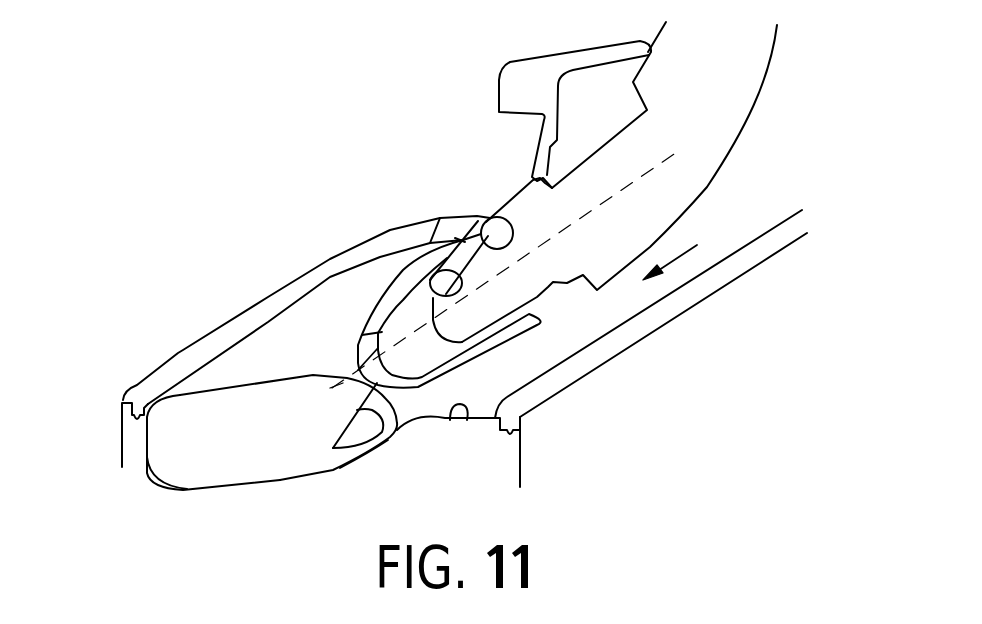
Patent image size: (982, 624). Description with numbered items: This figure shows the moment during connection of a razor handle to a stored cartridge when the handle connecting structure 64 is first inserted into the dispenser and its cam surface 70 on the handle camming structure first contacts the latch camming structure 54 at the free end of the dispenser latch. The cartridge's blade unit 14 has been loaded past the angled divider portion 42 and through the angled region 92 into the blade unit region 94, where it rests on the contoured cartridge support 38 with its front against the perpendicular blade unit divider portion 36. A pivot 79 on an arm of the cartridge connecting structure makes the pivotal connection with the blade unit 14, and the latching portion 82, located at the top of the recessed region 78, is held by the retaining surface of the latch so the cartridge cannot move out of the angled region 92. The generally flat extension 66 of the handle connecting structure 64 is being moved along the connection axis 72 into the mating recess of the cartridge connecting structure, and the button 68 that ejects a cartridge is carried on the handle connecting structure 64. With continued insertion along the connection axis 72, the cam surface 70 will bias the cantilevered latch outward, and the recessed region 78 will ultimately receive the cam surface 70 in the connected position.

The blade unit 14 is at (245, 385).
The perpendicular blade unit divider portion 36 is at (133, 443).
The cartridge support 38 is at (467, 420).
The angled divider portion 42 is at (347, 248).
The latch camming structure 54 is at (487, 215).
The handle connecting structure 64 is at (342, 70).
The extension 66 is at (537, 297).
The button 68 is at (500, 67).
The cam surface 70 is at (500, 217).
The connection axis 72 is at (347, 352).
The recessed region 78 is at (430, 247).
The pivot 79 is at (333, 447).
The latching portion 82 is at (481, 218).
The angled region 92 is at (353, 290).
The blade unit region 94 is at (160, 482).